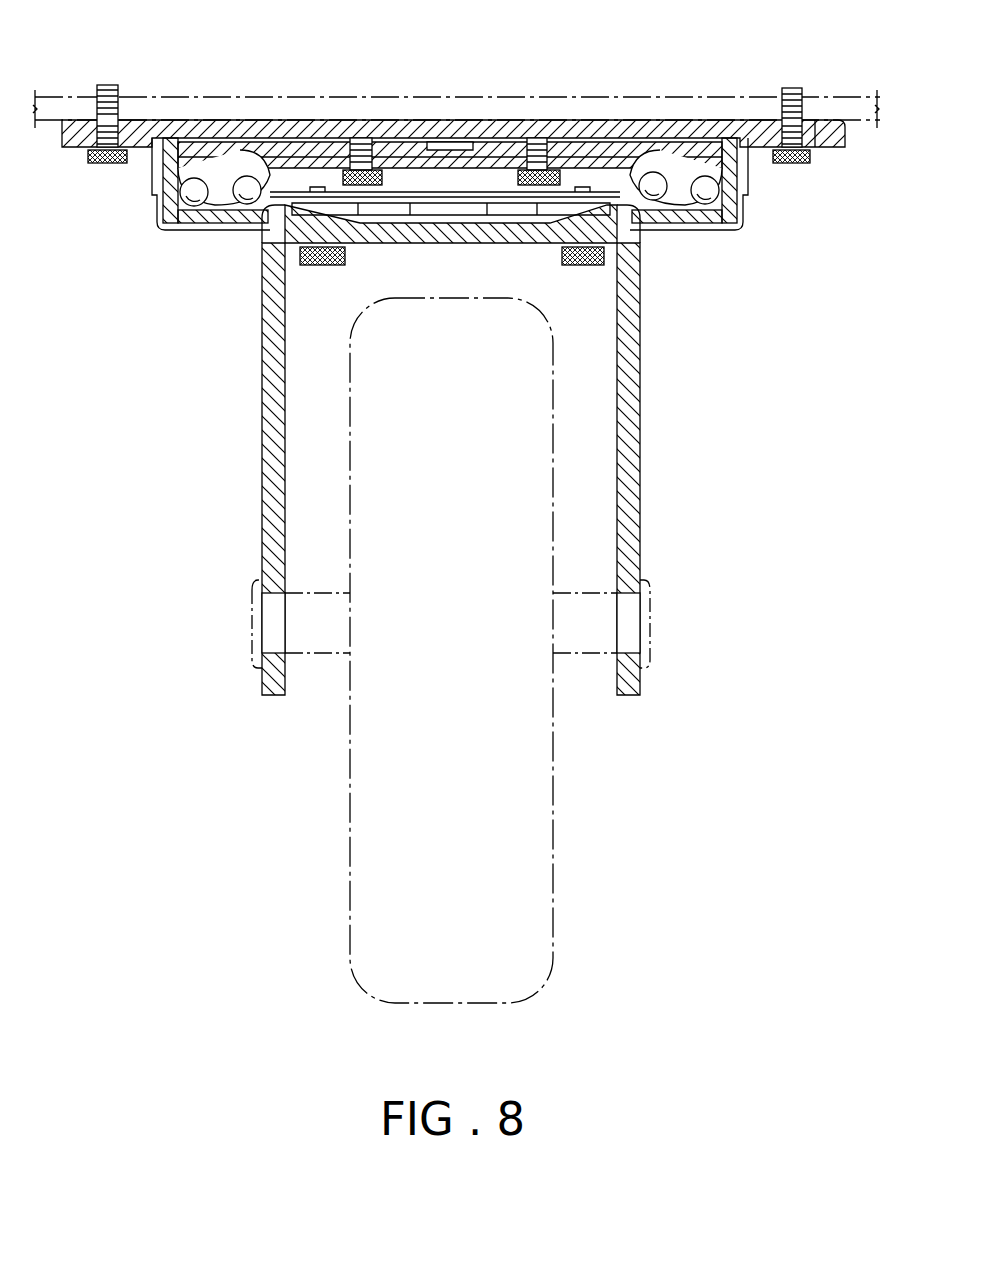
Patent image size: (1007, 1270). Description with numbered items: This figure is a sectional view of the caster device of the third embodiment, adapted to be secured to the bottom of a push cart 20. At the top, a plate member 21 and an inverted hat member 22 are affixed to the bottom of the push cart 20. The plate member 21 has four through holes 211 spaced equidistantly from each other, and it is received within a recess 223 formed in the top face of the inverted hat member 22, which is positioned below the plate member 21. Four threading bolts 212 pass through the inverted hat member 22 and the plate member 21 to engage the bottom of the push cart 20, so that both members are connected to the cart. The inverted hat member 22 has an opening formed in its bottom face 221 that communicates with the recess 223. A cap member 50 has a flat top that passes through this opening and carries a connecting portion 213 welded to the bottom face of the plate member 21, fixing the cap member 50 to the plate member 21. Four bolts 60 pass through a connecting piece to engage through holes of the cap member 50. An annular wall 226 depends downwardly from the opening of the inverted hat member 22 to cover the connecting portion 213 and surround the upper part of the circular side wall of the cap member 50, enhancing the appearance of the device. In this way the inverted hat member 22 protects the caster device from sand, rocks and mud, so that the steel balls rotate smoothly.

The push cart 20 is at (725, 100).
The plate member 21 is at (152, 120).
The through holes 211 is at (97, 100).
The threading bolts 212 is at (787, 95).
The connecting portion 213 is at (210, 128).
The inverted hat member 22 is at (146, 185).
The bottom face 221 is at (822, 150).
The recess 223 is at (822, 122).
The annular wall 226 is at (750, 185).
The cap member 50 is at (722, 226).
The bolts 60 is at (545, 138).